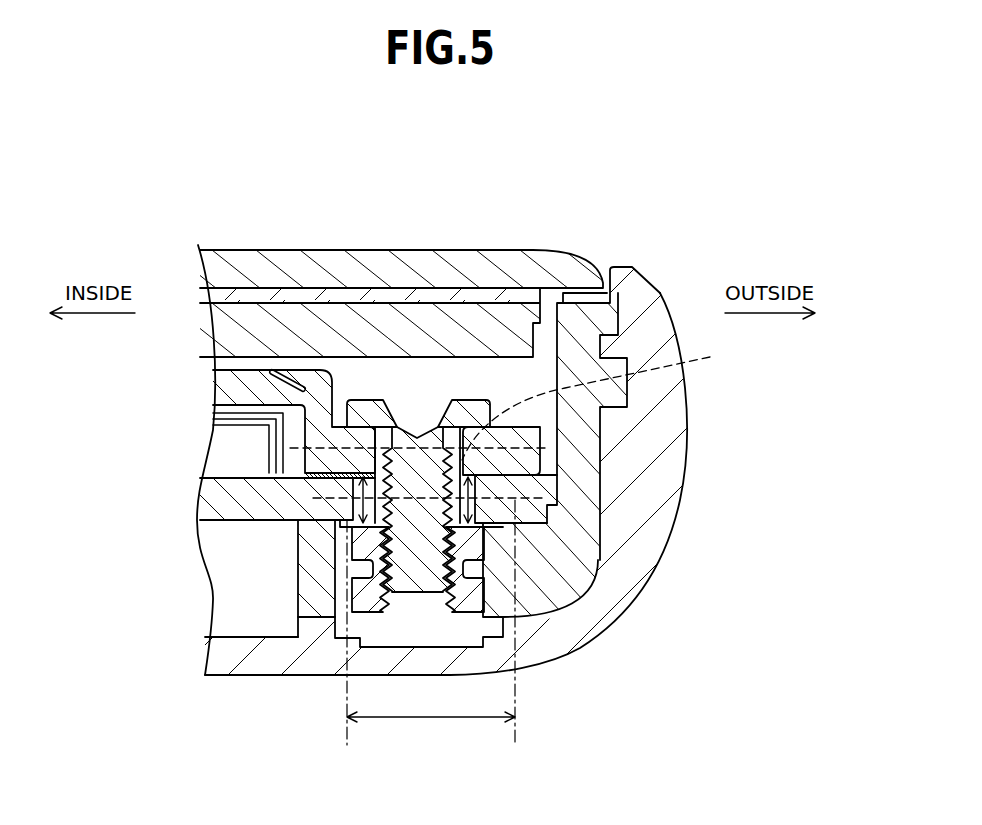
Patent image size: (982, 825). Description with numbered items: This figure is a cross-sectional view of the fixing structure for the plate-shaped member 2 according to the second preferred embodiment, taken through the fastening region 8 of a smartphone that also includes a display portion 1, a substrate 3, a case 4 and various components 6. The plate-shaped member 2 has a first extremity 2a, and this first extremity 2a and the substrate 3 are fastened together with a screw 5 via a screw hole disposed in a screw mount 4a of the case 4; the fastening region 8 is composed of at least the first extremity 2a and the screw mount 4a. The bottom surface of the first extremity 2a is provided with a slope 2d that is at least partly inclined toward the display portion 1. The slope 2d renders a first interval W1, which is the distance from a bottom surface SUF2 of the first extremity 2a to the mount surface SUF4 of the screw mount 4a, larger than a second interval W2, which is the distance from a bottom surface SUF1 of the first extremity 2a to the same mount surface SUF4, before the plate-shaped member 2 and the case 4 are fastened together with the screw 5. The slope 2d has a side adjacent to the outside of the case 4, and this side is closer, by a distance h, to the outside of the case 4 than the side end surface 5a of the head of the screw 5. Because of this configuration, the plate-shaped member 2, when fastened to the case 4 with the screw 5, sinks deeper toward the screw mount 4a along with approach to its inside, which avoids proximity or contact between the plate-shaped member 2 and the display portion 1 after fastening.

The display portion 1 is at (514, 322).
The plate-shaped member 2 is at (295, 372).
The first extremity 2a is at (533, 440).
The slope 2d is at (477, 468).
The substrate 3 is at (205, 507).
The case 4 is at (603, 620).
The screw mount 4a is at (485, 523).
The screw 5 is at (406, 391).
The side end surface of the head of the screw 5a is at (347, 422).
The various components 6 is at (231, 446).
The fastening region 8 is at (595, 402).
The bottom surface of the first extremity SUF1 is at (478, 477).
The bottom surface of the first extremity SUF2 is at (328, 479).
The mount surface SUF4 is at (503, 523).
The first interval W1 is at (359, 500).
The second interval W2 is at (475, 506).
The distance h is at (431, 733).